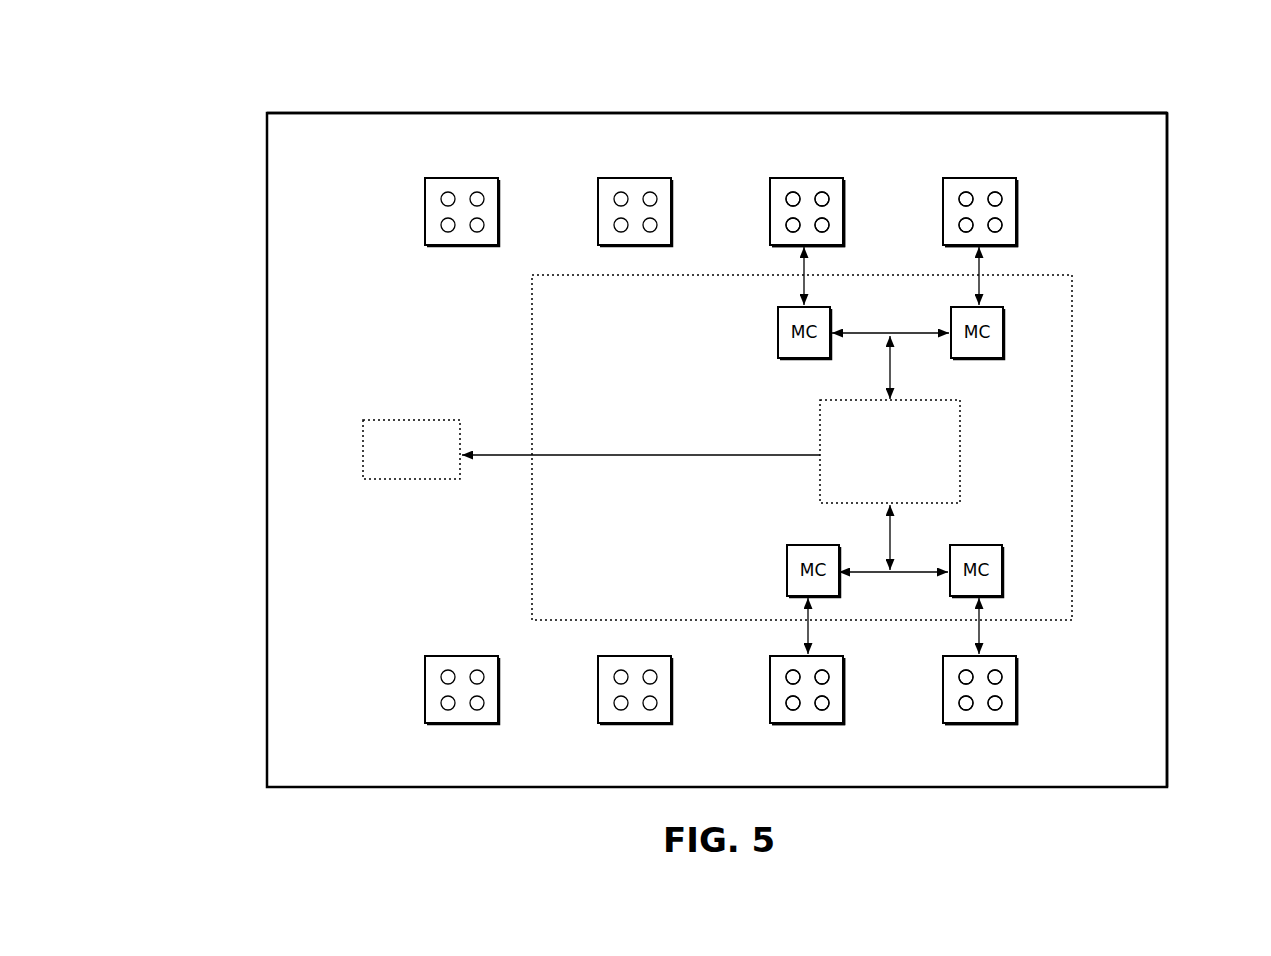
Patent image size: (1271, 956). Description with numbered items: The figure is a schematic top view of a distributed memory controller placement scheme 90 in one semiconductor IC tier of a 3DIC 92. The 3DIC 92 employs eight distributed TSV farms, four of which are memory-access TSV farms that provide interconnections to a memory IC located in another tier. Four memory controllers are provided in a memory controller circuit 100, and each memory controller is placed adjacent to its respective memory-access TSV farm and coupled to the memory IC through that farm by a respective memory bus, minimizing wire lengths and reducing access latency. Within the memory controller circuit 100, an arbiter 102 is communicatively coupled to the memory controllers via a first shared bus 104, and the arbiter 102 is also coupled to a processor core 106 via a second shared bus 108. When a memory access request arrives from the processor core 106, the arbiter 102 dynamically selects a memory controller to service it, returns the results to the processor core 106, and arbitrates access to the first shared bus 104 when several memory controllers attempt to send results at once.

The distributed memory controller placement scheme 90 is at (230, 85).
The 3DIC 92 is at (525, 112).
The memory controller circuit 100 is at (1072, 380).
The arbiter 102 is at (960, 440).
The first shared bus 104 is at (845, 335).
The processor core 106 is at (417, 480).
The second shared bus 108 is at (505, 453).